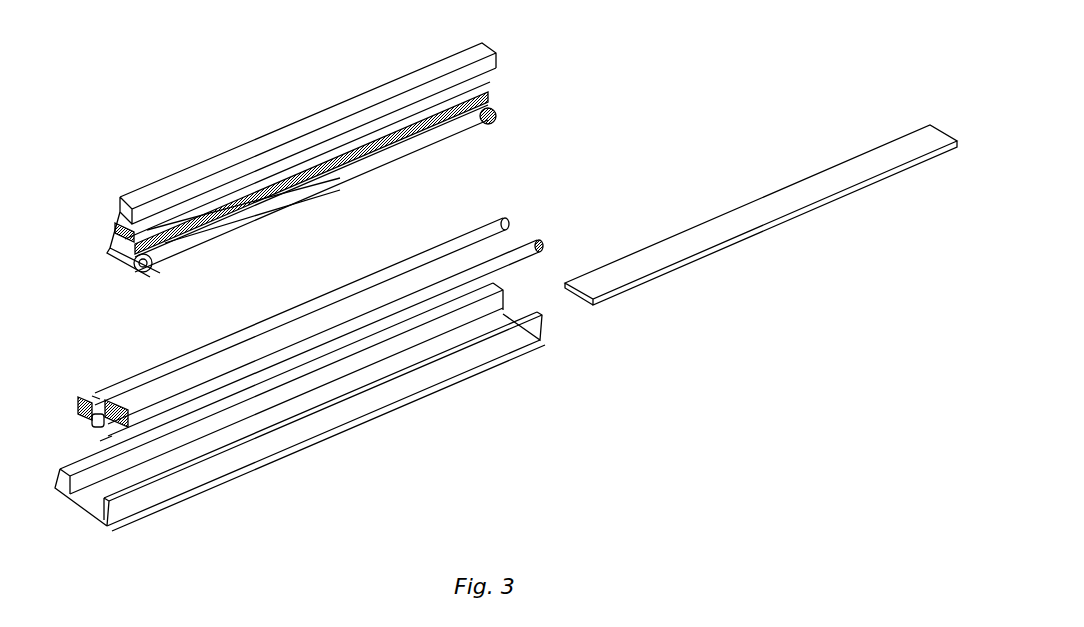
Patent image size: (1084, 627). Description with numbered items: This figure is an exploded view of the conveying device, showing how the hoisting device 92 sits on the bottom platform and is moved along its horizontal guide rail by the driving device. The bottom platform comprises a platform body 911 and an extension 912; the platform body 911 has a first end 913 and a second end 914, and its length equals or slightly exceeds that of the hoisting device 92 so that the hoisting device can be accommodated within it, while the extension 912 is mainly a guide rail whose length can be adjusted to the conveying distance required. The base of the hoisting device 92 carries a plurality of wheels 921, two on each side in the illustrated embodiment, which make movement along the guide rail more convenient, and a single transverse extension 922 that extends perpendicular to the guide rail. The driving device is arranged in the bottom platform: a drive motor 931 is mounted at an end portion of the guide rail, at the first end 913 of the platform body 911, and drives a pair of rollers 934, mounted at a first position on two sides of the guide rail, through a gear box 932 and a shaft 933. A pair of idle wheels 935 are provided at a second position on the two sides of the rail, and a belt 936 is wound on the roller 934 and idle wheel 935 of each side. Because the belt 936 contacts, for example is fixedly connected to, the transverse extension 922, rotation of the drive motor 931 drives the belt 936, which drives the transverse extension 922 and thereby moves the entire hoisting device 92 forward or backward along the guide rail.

The hoisting device 92 is at (494, 80).
The wheels 921 is at (488, 125).
The transverse extension 922 is at (116, 245).
The platform body 911 is at (393, 382).
The extension 912 is at (740, 228).
The first end 913 is at (122, 525).
The second end 914 is at (540, 340).
The drive motor 931 is at (112, 400).
The gear box 932 is at (95, 421).
The shaft 933 is at (84, 404).
The rollers 934 is at (103, 443).
The idle wheels 935 is at (541, 239).
The belt 936 is at (418, 289).